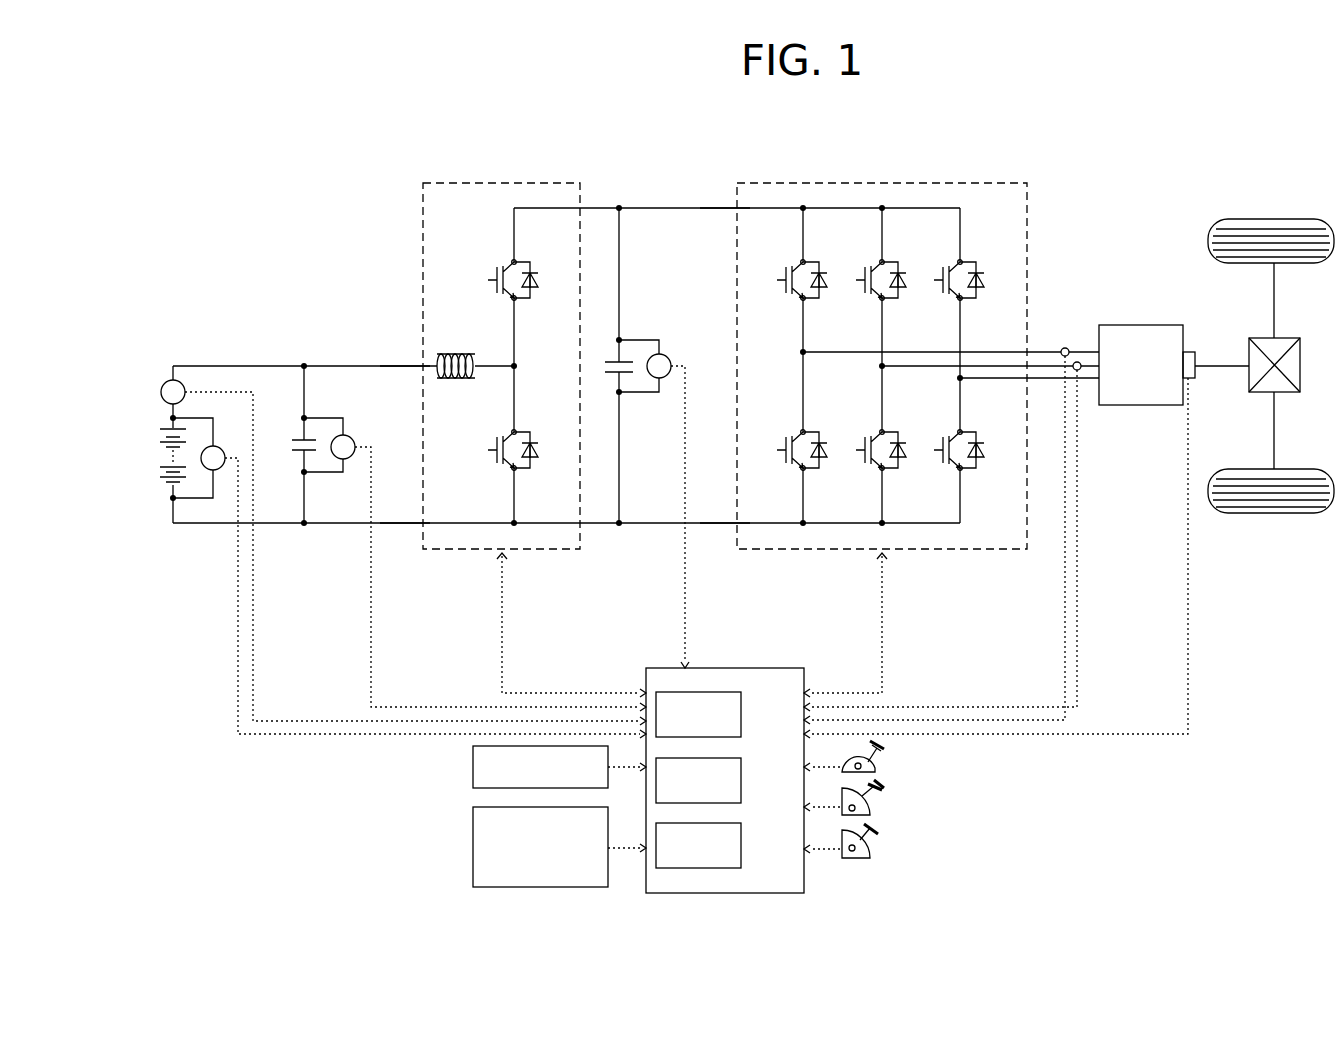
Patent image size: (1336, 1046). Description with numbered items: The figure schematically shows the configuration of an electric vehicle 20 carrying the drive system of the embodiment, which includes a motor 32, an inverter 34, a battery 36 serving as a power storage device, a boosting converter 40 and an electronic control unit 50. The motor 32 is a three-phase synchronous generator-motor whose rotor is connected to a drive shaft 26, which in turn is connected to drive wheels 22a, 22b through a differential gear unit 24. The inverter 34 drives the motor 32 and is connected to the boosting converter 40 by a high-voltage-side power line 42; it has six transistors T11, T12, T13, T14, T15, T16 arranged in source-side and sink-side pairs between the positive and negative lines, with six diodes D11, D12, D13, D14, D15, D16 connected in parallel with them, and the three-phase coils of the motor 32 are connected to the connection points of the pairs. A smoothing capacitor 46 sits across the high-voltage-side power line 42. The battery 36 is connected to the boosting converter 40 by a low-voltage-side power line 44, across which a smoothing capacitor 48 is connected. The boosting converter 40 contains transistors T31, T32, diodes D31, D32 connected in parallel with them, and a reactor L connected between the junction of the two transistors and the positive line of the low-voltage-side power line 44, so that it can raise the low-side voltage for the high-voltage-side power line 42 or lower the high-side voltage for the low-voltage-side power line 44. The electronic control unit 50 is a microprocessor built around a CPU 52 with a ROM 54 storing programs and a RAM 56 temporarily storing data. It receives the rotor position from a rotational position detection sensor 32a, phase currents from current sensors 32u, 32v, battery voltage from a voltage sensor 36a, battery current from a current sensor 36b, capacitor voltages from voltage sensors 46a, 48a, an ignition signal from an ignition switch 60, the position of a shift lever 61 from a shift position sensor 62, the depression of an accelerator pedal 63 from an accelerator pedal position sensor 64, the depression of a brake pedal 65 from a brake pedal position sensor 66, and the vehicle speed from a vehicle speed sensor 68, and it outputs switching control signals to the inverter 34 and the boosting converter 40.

The electric vehicle 20 is at (1187, 149).
The drive wheel 22a is at (1273, 219).
The drive wheel 22b is at (1273, 513).
The differential gear unit 24 is at (1285, 338).
The drive shaft 26 is at (1223, 365).
The motor 32 is at (1142, 325).
The rotational position detection sensor 32a is at (1190, 352).
The current sensor 32u is at (1063, 346).
The current sensor 32v is at (1080, 360).
The inverter 34 is at (884, 183).
The battery 36 is at (171, 492).
The voltage sensor 36a is at (215, 445).
The current sensor 36b is at (170, 379).
The boosting converter 40 is at (513, 183).
The high-voltage-side power line 42 is at (725, 210).
The low-voltage-side power line 44 is at (406, 521).
The smoothing capacitor 46 is at (608, 362).
The voltage sensor 46a is at (662, 352).
The smoothing capacitor 48 is at (294, 438).
The voltage sensor 48a is at (349, 436).
The electronic control unit 50 is at (710, 668).
The CPU 52 is at (741, 713).
The ROM 54 is at (741, 779).
The RAM 56 is at (741, 845).
The ignition switch 60 is at (473, 767).
The shift lever 61 is at (880, 752).
The shift position sensor 62 is at (876, 770).
The accelerator pedal 63 is at (882, 797).
The accelerator pedal position sensor 64 is at (870, 812).
The brake pedal 65 is at (878, 840).
The brake pedal position sensor 66 is at (870, 855).
The vehicle speed sensor 68 is at (473, 848).
The transistor T11 is at (785, 272).
The transistor T12 is at (864, 272).
The transistor T13 is at (942, 272).
The transistor T14 is at (785, 440).
The transistor T15 is at (864, 440).
The transistor T16 is at (942, 440).
The diode D11 is at (821, 297).
The diode D12 is at (900, 297).
The diode D13 is at (978, 297).
The diode D14 is at (821, 467).
The diode D15 is at (900, 467).
The diode D16 is at (978, 467).
The transistor T31 is at (497, 270).
The transistor T32 is at (497, 440).
The diode D31 is at (531, 297).
The diode D32 is at (531, 467).
The reactor L is at (460, 350).